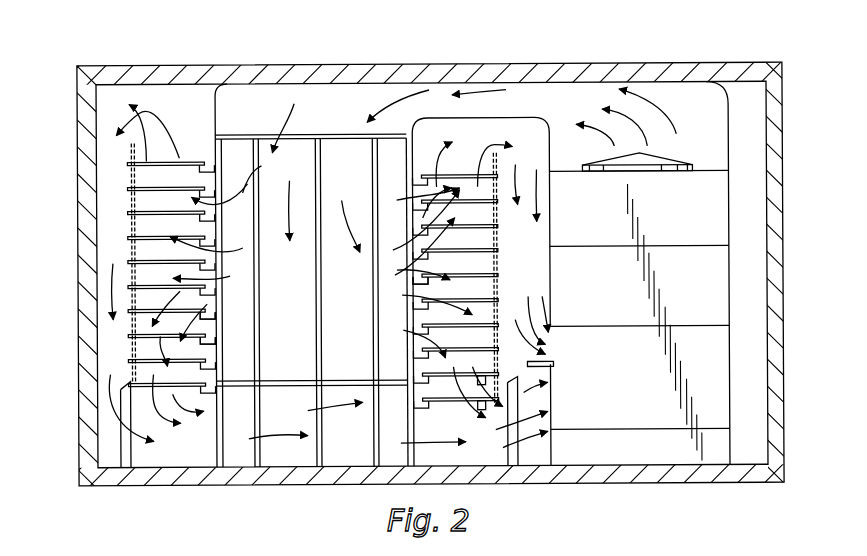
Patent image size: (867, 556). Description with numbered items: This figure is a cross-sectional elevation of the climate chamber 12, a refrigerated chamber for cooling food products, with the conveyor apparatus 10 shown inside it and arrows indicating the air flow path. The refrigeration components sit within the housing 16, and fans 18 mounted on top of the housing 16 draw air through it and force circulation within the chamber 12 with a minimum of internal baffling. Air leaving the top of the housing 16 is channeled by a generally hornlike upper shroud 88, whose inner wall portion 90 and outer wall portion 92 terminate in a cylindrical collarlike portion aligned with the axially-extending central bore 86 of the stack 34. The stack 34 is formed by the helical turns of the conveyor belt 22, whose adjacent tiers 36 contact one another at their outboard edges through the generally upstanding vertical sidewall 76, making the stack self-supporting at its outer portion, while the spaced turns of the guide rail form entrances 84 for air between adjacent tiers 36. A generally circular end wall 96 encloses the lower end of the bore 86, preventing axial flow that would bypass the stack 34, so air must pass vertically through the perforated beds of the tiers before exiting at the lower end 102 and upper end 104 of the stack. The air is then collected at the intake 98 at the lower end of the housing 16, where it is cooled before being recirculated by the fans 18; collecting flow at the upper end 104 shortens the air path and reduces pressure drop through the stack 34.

The conveyor apparatus 10 is at (531, 107).
The climate chamber 12 is at (530, 67).
The housing 16 is at (720, 280).
The fans 18 is at (672, 163).
The conveyor belt 22 is at (198, 144).
The stack 34 is at (500, 167).
The tiers 36 is at (503, 313).
The sidewall 76 is at (132, 220).
The entrances 84 is at (213, 325).
The central bore 86 is at (302, 160).
The upper shroud 88 is at (487, 118).
The inner wall portion 90 is at (415, 120).
The outer wall portion 92 is at (226, 92).
The end wall 96 is at (282, 377).
The intake 98 is at (560, 347).
The lower end 102 is at (185, 363).
The upper end 104 is at (115, 104).